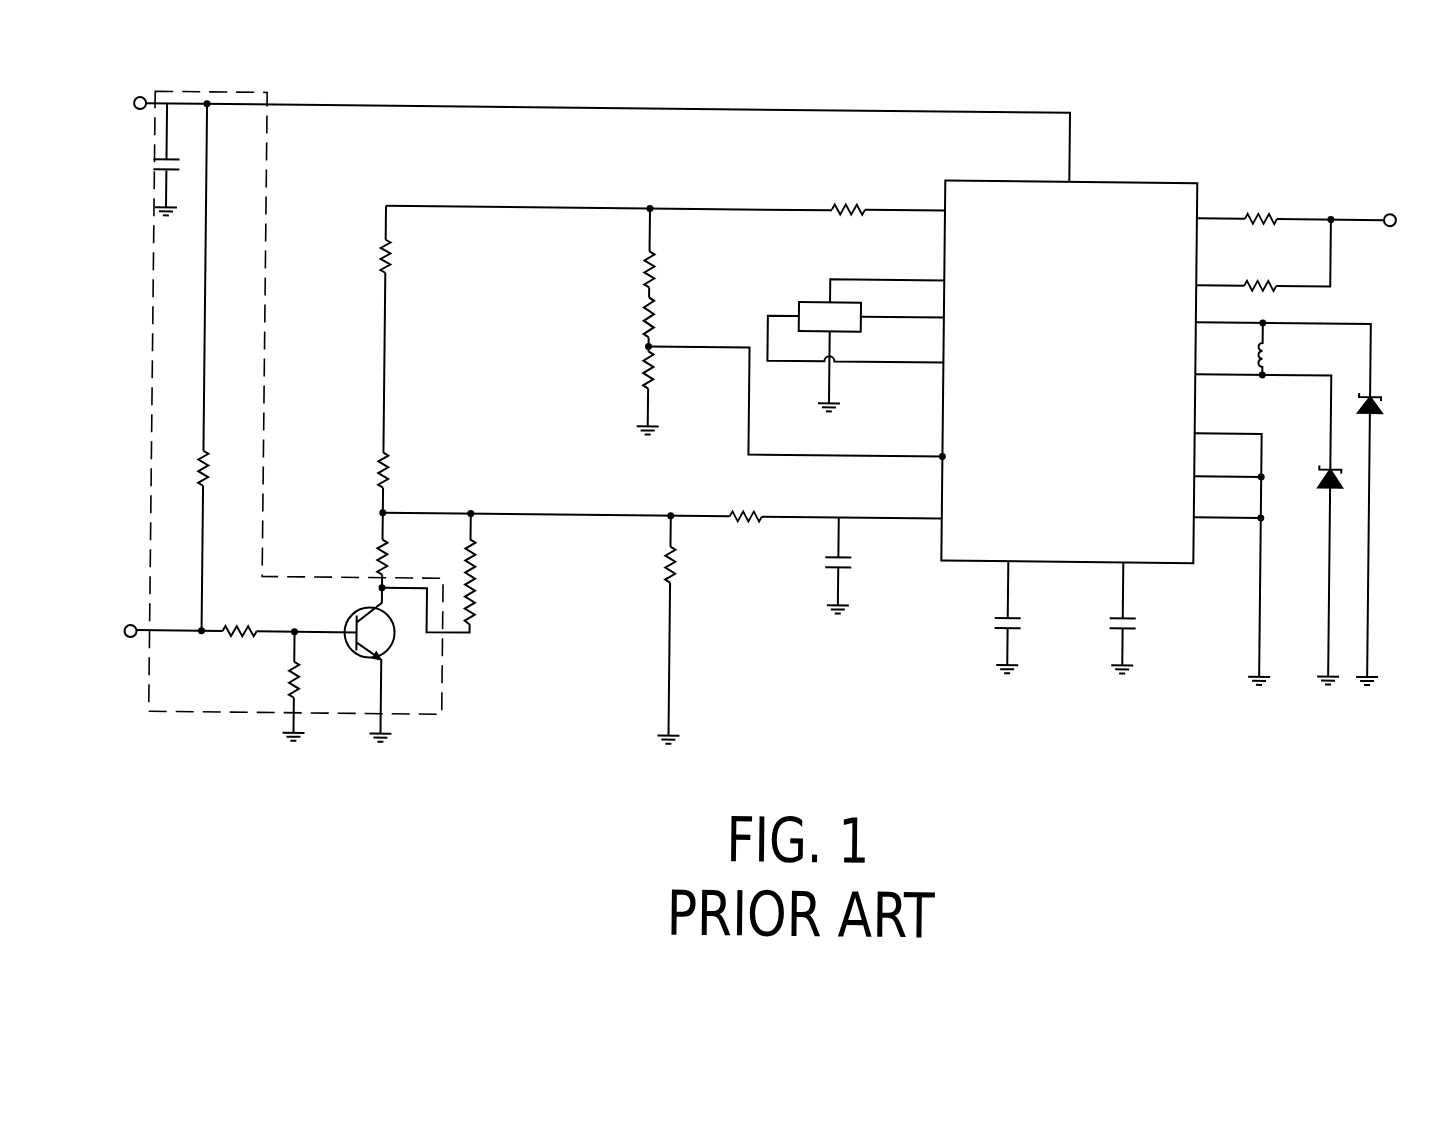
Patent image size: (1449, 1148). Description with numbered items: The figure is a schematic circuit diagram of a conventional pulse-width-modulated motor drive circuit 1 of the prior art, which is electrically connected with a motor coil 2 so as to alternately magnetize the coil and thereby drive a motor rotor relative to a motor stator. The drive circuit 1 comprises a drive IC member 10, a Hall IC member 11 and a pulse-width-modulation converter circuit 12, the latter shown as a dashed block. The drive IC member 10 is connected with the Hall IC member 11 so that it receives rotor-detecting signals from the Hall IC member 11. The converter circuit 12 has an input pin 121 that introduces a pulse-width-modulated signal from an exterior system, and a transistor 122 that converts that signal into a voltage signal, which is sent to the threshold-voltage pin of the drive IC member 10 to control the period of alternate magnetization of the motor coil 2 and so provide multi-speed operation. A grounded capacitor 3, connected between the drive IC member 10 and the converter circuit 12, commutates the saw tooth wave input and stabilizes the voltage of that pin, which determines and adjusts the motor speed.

The PWM motor drive circuit 1 is at (772, 450).
The motor coil 2 is at (1277, 344).
The capacitor 3 is at (859, 575).
The drive IC member 10 is at (1118, 177).
The Hall IC member 11 is at (814, 303).
The PWM converter circuit 12 is at (314, 463).
The PWM input pin 121 is at (134, 646).
The transistor 122 is at (365, 664).